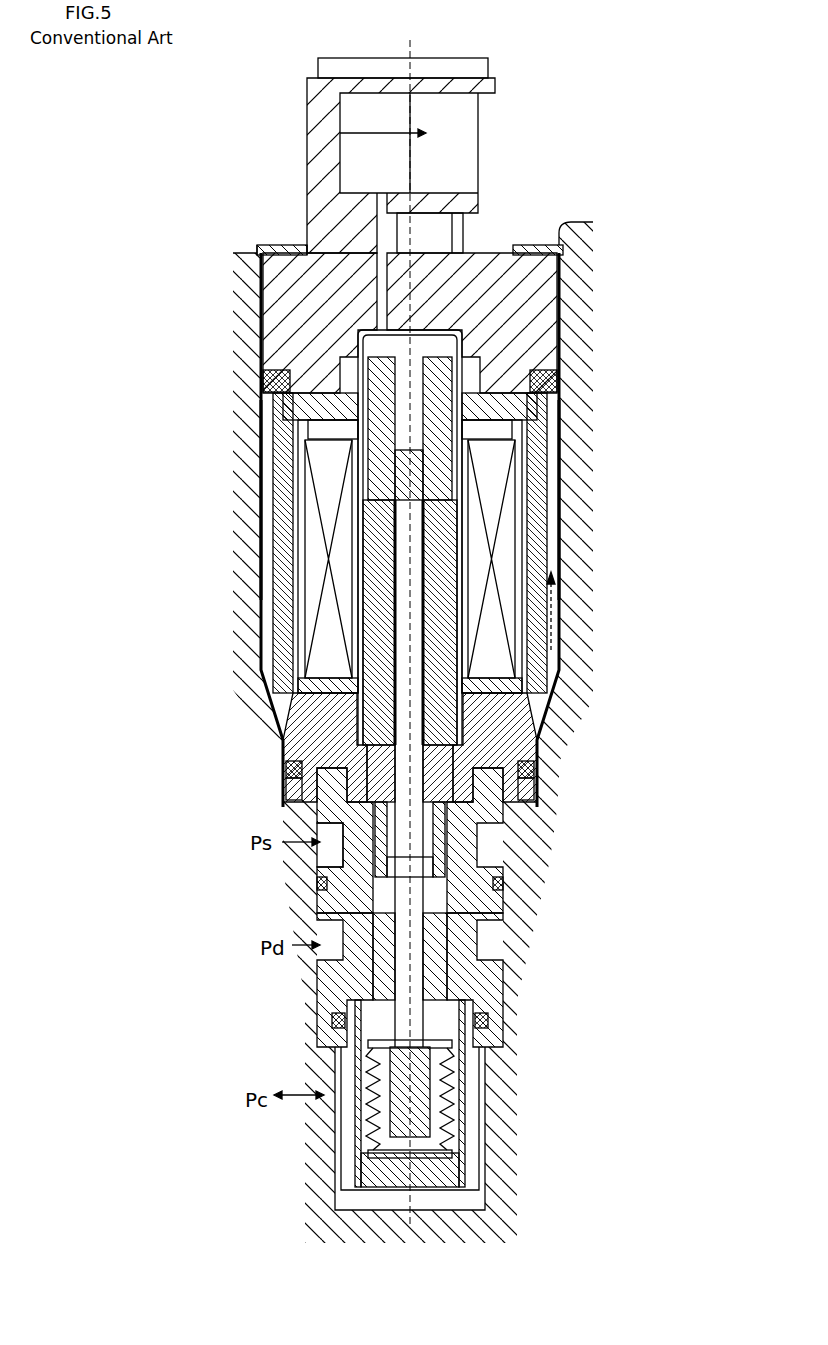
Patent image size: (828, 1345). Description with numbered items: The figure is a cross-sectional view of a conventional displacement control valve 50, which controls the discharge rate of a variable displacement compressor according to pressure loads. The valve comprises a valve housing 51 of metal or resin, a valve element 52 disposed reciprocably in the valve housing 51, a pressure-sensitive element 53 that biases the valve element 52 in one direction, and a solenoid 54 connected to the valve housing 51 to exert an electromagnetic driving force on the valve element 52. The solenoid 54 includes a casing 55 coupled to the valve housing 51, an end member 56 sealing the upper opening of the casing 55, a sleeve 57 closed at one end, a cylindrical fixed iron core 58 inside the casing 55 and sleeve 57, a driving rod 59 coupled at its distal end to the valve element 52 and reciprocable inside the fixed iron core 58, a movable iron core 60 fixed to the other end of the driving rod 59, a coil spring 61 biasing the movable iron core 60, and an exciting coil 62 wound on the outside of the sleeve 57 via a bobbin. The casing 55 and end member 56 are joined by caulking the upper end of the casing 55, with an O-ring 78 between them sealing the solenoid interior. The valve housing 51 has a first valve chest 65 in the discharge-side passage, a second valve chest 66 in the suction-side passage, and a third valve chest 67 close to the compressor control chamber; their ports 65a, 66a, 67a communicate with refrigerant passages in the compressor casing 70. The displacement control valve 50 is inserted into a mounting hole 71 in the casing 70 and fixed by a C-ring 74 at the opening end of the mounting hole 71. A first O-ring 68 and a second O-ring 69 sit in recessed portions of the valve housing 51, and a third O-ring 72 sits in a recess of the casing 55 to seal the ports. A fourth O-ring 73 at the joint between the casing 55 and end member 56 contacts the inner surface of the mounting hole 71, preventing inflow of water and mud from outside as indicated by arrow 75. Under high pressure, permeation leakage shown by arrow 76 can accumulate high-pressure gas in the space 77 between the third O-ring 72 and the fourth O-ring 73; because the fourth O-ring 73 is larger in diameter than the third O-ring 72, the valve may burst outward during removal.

The displacement control valve 50 is at (575, 71).
The valve housing 51 is at (448, 830).
The valve element 52 is at (496, 948).
The pressure-sensitive element 53 is at (442, 1082).
The solenoid 54 is at (262, 500).
The casing 55 is at (505, 485).
The end member 56 is at (497, 252).
The sleeve 57 is at (565, 345).
The fixed iron core 58 is at (463, 602).
The driving rod 59 is at (437, 586).
The movable iron core 60 is at (455, 414).
The coil spring 61 is at (430, 512).
The exciting coil 62 is at (298, 540).
The first valve chest 65 is at (320, 925).
The port 65a is at (322, 968).
The second valve chest 66 is at (290, 790).
The port 66a is at (320, 866).
The third valve chest 67 is at (345, 1072).
The port 67a is at (350, 1105).
The first O-ring 68 is at (505, 880).
The second O-ring 69 is at (480, 1018).
The casing 70 is at (258, 232).
The mounting hole 71 is at (578, 293).
The third O-ring 72 is at (536, 756).
The fourth O-ring 73 is at (265, 382).
The C-ring 74 is at (281, 245).
The arrow 75 is at (262, 245).
The arrow 76 is at (560, 668).
The space 77 is at (557, 526).
The O-ring 78 is at (285, 418).